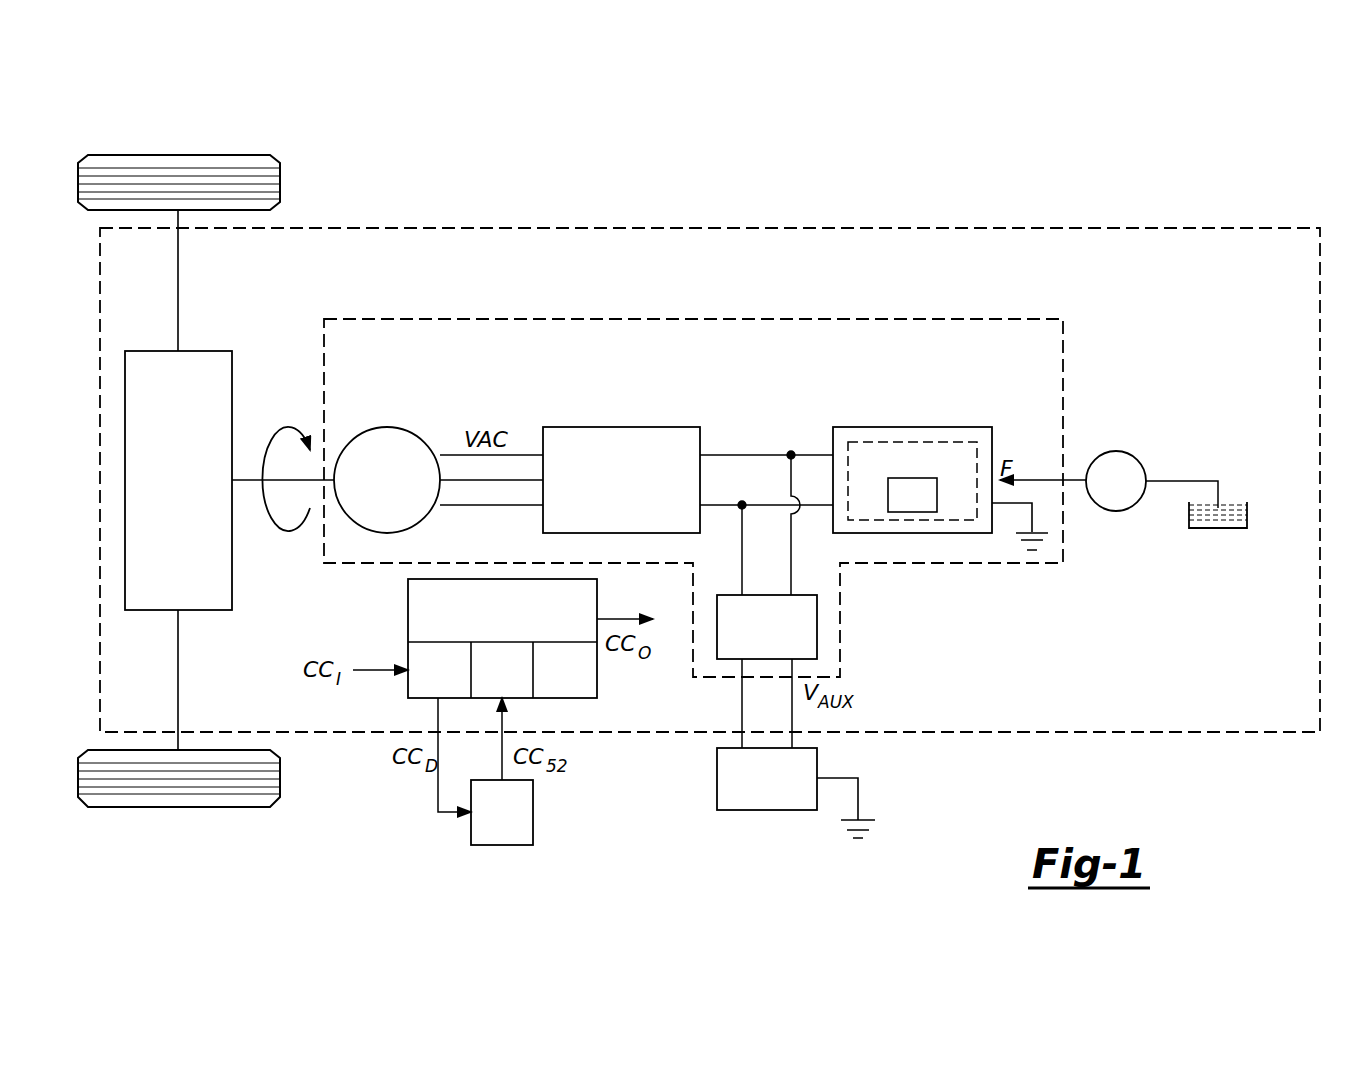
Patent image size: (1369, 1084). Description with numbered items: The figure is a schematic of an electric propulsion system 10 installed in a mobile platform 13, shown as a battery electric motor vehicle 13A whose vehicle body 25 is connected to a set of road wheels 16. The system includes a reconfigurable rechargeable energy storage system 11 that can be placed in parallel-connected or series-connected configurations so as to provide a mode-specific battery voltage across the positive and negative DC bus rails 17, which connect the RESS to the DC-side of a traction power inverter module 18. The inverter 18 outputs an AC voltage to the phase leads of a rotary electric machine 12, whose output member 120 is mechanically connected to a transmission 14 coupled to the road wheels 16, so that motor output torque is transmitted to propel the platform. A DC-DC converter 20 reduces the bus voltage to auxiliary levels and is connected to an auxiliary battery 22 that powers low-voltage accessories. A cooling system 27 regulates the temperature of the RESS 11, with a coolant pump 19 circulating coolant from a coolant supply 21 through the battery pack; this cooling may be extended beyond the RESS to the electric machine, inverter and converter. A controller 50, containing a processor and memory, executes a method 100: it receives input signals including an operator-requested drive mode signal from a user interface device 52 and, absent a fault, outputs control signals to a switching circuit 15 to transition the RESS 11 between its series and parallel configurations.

The electric propulsion system 10 is at (950, 298).
The reconfigurable rechargeable energy storage system 11 is at (912, 427).
The rotary electric machine 12 is at (387, 427).
The mobile platform 13 is at (1203, 312).
The battery electric motor vehicle 13A is at (1255, 178).
The transmission 14 is at (125, 480).
The switching circuit 15 is at (912, 495).
The road wheels 16 is at (178, 155).
The positive and negative DC bus rails 17 is at (772, 490).
The traction power inverter module 18 is at (622, 427).
The coolant pump 19 is at (1118, 451).
The DC-DC converter 20 is at (817, 627).
The coolant supply 21 is at (1236, 508).
The auxiliary battery 22 is at (717, 778).
The vehicle body 25 is at (1155, 228).
The cooling system 27 is at (952, 442).
The controller 50 is at (408, 613).
The user interface device 52 is at (503, 845).
The method 100 is at (441, 672).
The output member 120 is at (247, 482).